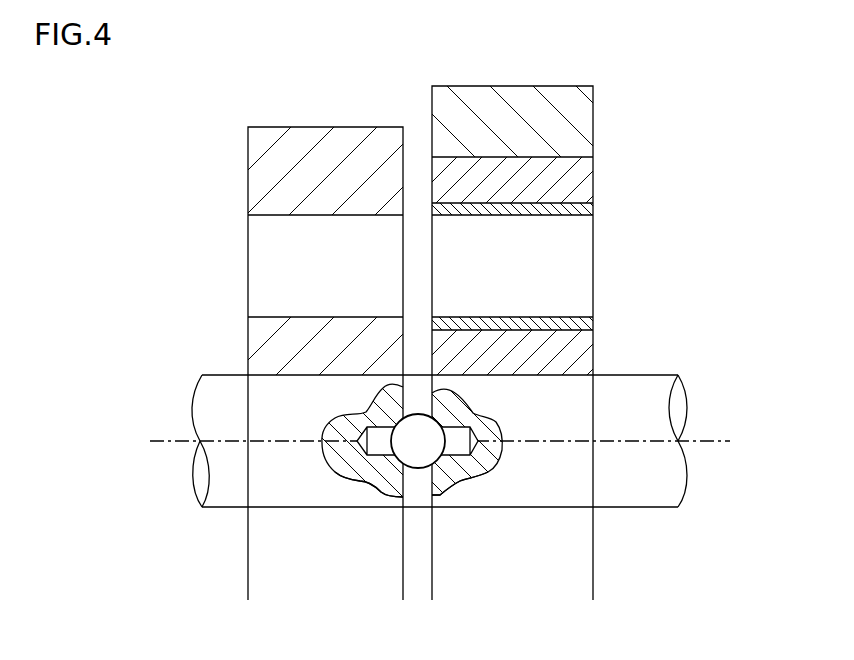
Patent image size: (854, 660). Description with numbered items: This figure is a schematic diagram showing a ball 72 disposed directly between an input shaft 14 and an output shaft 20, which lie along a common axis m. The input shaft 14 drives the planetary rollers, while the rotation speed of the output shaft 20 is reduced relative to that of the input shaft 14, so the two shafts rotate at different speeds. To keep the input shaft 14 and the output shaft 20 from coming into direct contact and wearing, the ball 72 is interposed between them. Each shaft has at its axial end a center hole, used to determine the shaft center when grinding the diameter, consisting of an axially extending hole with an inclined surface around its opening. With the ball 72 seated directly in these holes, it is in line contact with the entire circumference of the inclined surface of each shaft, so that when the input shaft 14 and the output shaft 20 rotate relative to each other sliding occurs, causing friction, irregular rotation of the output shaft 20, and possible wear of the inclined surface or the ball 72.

The input shaft 14 is at (622, 375).
The output shaft 20 is at (226, 375).
The ball 72 is at (408, 427).
The axis m is at (723, 441).